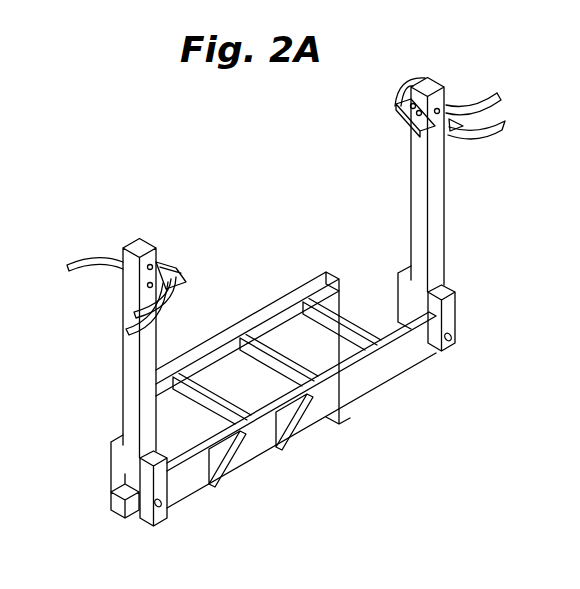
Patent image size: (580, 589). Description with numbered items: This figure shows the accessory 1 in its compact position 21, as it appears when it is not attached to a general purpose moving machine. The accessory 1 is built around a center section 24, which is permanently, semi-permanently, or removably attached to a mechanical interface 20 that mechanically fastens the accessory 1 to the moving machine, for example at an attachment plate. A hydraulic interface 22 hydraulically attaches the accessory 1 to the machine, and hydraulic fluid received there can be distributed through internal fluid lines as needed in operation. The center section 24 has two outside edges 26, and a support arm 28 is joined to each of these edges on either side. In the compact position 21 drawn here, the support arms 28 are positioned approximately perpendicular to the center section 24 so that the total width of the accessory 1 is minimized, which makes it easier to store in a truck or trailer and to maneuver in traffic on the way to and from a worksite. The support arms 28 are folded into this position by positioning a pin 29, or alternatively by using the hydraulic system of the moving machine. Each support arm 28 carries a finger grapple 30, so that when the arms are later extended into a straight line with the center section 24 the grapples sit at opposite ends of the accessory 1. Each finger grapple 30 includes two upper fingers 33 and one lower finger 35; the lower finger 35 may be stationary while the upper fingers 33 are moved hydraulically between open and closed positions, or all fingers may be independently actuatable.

The accessory 1 is at (229, 126).
The mechanical interface 20 is at (268, 312).
The compact position 21 is at (461, 399).
The hydraulic interface 22 is at (405, 115).
The center section 24 is at (290, 418).
The outside edges 26 is at (113, 520).
The support arms 28 is at (125, 370).
The pin 29 is at (458, 337).
The finger grapples 30 is at (184, 254).
The upper fingers 33 is at (150, 308).
The lower finger 35 is at (107, 258).